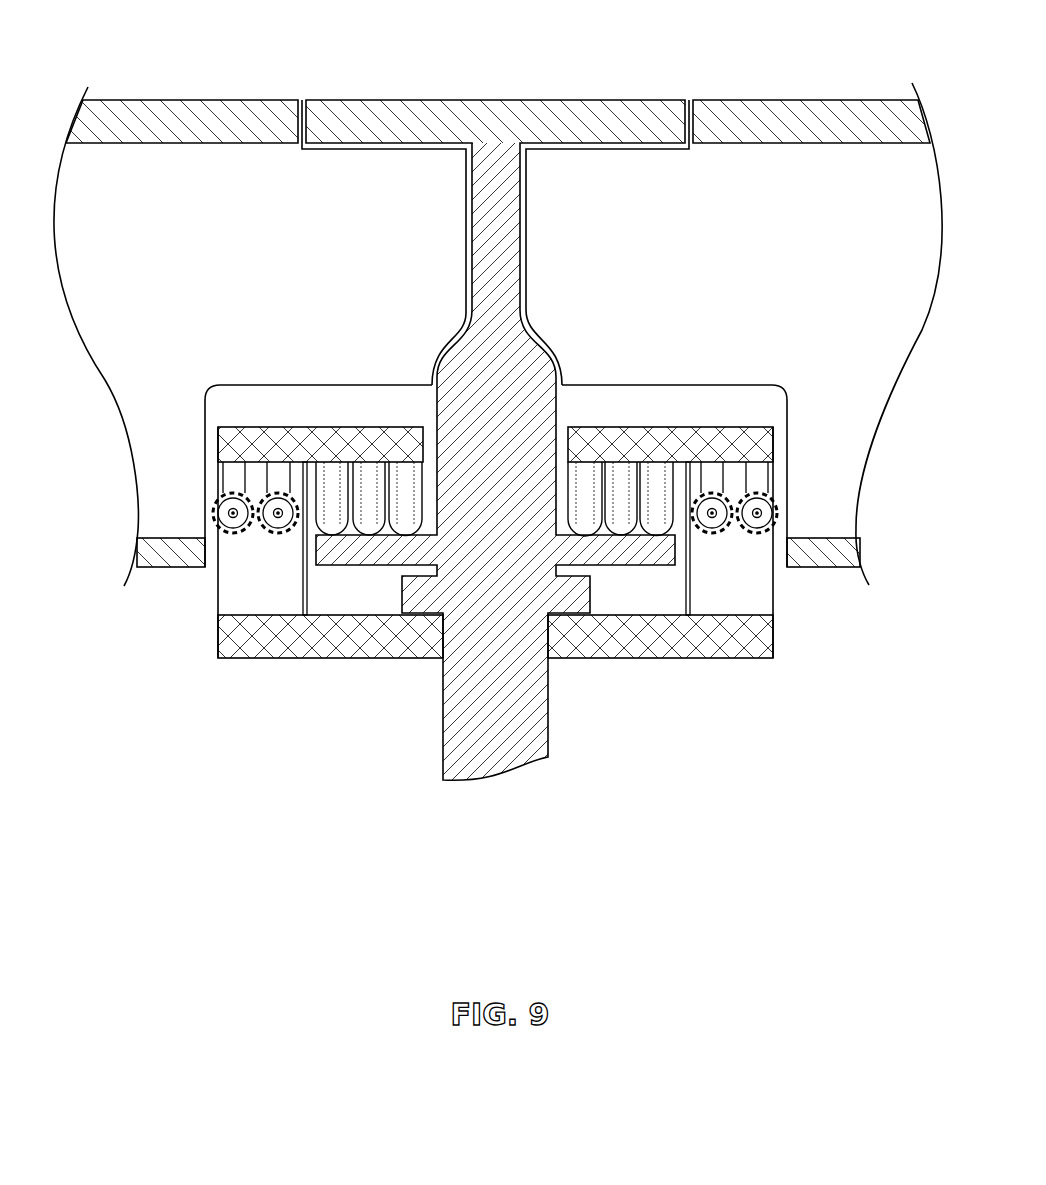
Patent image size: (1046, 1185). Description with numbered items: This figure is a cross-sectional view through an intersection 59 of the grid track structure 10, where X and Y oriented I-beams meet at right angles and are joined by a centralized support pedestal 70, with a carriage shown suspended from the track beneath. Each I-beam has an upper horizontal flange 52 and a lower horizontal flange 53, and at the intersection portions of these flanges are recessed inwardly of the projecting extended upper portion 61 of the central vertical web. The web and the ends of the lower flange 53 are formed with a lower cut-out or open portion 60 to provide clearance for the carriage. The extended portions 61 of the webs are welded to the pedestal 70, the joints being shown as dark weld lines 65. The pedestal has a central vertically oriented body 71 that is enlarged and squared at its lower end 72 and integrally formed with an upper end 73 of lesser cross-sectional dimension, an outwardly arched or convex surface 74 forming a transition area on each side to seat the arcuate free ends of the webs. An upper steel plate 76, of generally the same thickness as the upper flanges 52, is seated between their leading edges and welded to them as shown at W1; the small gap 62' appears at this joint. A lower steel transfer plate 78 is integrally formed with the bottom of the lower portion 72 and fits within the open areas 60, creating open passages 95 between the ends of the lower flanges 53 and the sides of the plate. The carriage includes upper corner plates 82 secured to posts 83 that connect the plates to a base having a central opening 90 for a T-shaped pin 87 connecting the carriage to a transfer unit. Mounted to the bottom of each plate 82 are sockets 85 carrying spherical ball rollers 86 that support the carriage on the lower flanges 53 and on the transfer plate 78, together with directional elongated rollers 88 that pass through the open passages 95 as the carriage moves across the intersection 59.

The fixture assembly 10 is at (140, 525).
The upper horizontal flange 52 is at (145, 100).
The lower horizontal flange 53 is at (180, 538).
The intersection 59 is at (447, 93).
The lower cut-out or open portion 60 is at (258, 392).
The extended upper portion of the web 61 is at (262, 175).
The gap 62' is at (701, 159).
The weld lines 65 is at (386, 150).
The support pedestal 70 is at (466, 316).
The central vertically oriented body 71 is at (536, 365).
The lower end of the body 72 is at (460, 512).
The upper end of the body 73 is at (496, 250).
The outwardly arched or convex surface 74 is at (538, 352).
The upper steel plate 76 is at (540, 100).
The lower steel transfer plate 78 is at (583, 562).
The upper corner plates 82 is at (728, 427).
The posts 83 is at (218, 598).
The sockets 85 is at (372, 470).
The spherical ball rollers 86 is at (330, 538).
The T-shaped pin 87 is at (550, 726).
The directional elongated rollers 88 is at (220, 495).
The central opening 90 is at (545, 648).
The open passages 95 is at (232, 540).
The weld W1 is at (300, 100).